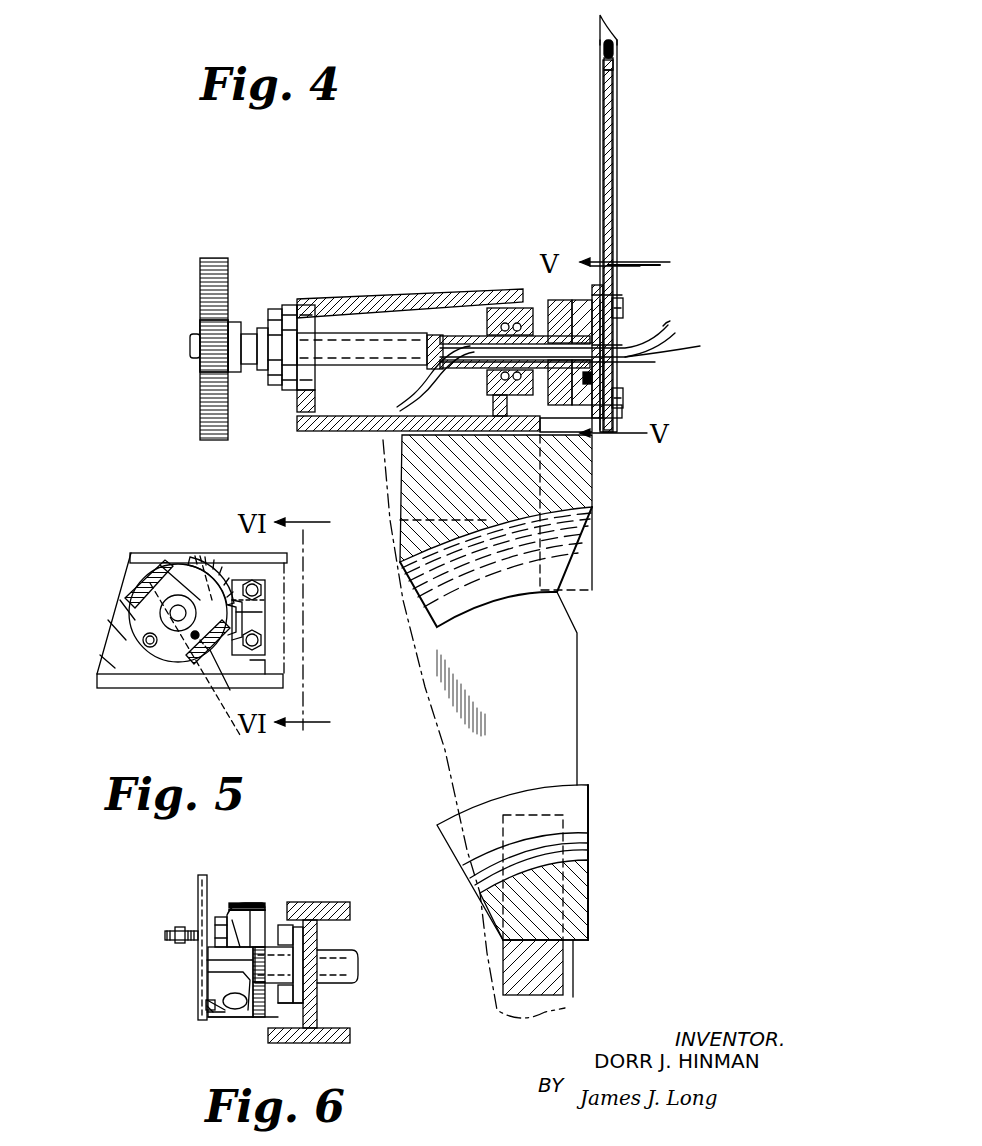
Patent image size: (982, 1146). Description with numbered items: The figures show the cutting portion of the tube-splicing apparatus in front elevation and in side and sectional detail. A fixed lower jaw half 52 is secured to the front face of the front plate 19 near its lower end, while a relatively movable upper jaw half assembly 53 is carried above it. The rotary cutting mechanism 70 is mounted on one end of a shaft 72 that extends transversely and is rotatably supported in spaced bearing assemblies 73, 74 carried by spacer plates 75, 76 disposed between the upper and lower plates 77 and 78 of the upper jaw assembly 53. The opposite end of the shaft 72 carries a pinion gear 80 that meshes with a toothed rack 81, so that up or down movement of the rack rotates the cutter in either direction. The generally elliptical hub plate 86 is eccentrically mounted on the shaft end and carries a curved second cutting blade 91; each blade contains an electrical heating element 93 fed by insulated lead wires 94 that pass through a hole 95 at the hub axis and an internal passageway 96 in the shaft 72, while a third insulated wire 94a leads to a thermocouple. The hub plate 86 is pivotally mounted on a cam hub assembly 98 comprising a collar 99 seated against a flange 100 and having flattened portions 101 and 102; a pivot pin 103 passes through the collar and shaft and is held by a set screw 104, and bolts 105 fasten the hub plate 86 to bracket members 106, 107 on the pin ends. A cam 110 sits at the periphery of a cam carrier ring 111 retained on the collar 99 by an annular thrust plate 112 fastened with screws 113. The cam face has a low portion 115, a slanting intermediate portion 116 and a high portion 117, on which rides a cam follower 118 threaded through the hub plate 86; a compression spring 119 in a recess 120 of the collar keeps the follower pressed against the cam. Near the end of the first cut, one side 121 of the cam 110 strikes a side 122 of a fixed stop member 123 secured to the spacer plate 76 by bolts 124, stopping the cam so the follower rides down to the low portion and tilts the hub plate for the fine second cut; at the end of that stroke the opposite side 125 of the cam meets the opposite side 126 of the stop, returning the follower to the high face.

In FIG. 4, the front plate 19 is at (578, 705).
In FIG. 4, the fixed lower jaw half 52 is at (588, 890).
In FIG. 4, the upper jaw half assembly 53 is at (588, 505).
In FIG. 4, the rotary cutting mechanism 70 is at (628, 182).
In FIG. 4, the shaft 72 is at (330, 340).
In FIG. 5, the shaft 72 is at (176, 625).
In FIG. 6, the shaft 72 is at (358, 966).
In FIG. 4, the bearing assembly 73 is at (280, 306).
In FIG. 4, the bearing assembly 74 is at (440, 333).
In FIG. 4, the spacer plate 75 is at (296, 400).
In FIG. 4, the spacer plate 76 is at (488, 436).
In FIG. 5, the spacer plate 76 is at (128, 645).
In FIG. 6, the spacer plate 76 is at (318, 1022).
In FIG. 4, the upper plate 77 is at (374, 298).
In FIG. 5, the upper plate 77 is at (130, 555).
In FIG. 6, the upper plate 77 is at (320, 907).
In FIG. 4, the lower plate 78 is at (362, 416).
In FIG. 5, the lower plate 78 is at (100, 683).
In FIG. 6, the lower plate 78 is at (322, 1043).
In FIG. 4, the pinion gear 80 is at (190, 346).
In FIG. 4, the toothed rack 81 is at (201, 278).
In FIG. 4, the hub plate 86 is at (612, 96).
In FIG. 6, the hub plate 86 is at (203, 888).
In FIG. 4, the second cutting blade 91 is at (614, 58).
In FIG. 4, the electrical heating element 93 is at (608, 38).
In FIG. 4, the insulated lead wires 94 is at (668, 327).
In FIG. 4, the third insulated wire 94a is at (678, 340).
In FIG. 4, the hole 95 is at (640, 358).
In FIG. 4, the internal passageway 96 is at (435, 372).
In FIG. 5, the internal passageway 96 is at (170, 566).
In FIG. 4, the cam hub assembly 98 is at (572, 283).
In FIG. 6, the cam hub assembly 98 is at (243, 905).
In FIG. 4, the collar 99 is at (603, 330).
In FIG. 5, the collar 99 is at (120, 623).
In FIG. 6, the collar 99 is at (222, 978).
In FIG. 4, the flange 100 is at (520, 308).
In FIG. 4, the flattened portion 101 is at (608, 262).
In FIG. 5, the flattened portion 101 is at (165, 590).
In FIG. 4, the flattened portion 102 is at (603, 413).
In FIG. 5, the flattened portion 102 is at (195, 640).
In FIG. 6, the flattened portion 102 is at (207, 1000).
In FIG. 4, the pivot pin 103 is at (622, 266).
In FIG. 5, the pivot pin 103 is at (240, 700).
In FIG. 6, the pivot pin 103 is at (225, 1002).
In FIG. 4, the set screw 104 is at (592, 378).
In FIG. 5, the set screw 104 is at (203, 655).
In FIG. 4, the bolts 105 is at (623, 306).
In FIG. 6, the bolts 105 is at (206, 1003).
In FIG. 4, the bracket member 106 is at (600, 310).
In FIG. 5, the bracket member 106 is at (140, 588).
In FIG. 4, the bracket member 107 is at (622, 394).
In FIG. 5, the bracket member 107 is at (260, 678).
In FIG. 6, the bracket member 107 is at (212, 1012).
In FIG. 5, the cam 110 is at (220, 565).
In FIG. 6, the cam 110 is at (238, 905).
In FIG. 4, the cam carrier ring 111 is at (577, 300).
In FIG. 5, the cam carrier ring 111 is at (125, 597).
In FIG. 6, the cam carrier ring 111 is at (258, 1017).
In FIG. 4, the thrust plate 112 is at (556, 302).
In FIG. 6, the thrust plate 112 is at (271, 958).
In FIG. 4, the screws 113 is at (585, 440).
In FIG. 5, the low portion 115 is at (197, 560).
In FIG. 6, the low portion 115 is at (198, 900).
In FIG. 5, the slanting intermediate portion 116 is at (236, 585).
In FIG. 6, the slanting intermediate portion 116 is at (215, 930).
In FIG. 5, the high portion 117 is at (238, 590).
In FIG. 6, the high portion 117 is at (230, 990).
In FIG. 6, the cam follower 118 is at (175, 935).
In FIG. 5, the compression spring 119 is at (148, 648).
In FIG. 5, the recess 120 is at (112, 668).
In FIG. 5, the side of the cam 121 is at (262, 620).
In FIG. 6, the side of the cam 121 is at (262, 925).
In FIG. 5, the side of the stop member 122 is at (262, 585).
In FIG. 6, the side of the stop member 122 is at (283, 935).
In FIG. 5, the fixed stop member 123 is at (262, 630).
In FIG. 6, the fixed stop member 123 is at (265, 1017).
In FIG. 5, the bolts 124 is at (265, 600).
In FIG. 6, the bolts 124 is at (303, 950).
In FIG. 5, the opposite side of the cam 125 is at (183, 572).
In FIG. 5, the opposite side of the stop 126 is at (262, 648).
In FIG. 6, the opposite side of the stop 126 is at (280, 1005).